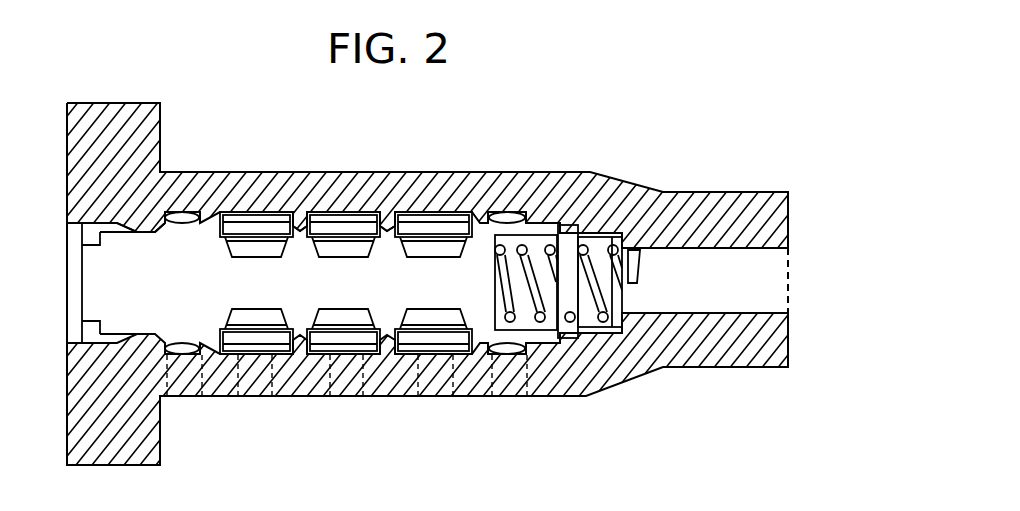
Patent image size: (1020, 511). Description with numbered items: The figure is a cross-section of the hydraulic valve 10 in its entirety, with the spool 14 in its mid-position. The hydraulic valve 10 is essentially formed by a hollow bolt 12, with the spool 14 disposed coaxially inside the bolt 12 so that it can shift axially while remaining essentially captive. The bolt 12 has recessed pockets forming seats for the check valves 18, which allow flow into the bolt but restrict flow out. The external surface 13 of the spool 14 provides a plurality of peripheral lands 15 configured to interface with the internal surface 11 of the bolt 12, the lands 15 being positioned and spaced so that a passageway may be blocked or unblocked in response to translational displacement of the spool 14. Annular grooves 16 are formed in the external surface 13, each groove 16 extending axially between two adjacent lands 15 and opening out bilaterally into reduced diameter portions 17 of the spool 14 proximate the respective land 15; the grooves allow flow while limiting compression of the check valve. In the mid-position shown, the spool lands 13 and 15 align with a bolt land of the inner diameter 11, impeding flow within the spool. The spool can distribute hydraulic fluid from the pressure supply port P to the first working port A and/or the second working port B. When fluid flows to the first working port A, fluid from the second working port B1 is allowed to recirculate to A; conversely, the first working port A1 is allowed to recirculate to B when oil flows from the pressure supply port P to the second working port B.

The hydraulic valve 10 is at (95, 66).
The internal surface of the bolt 11 is at (152, 240).
The hollow bolt 12 is at (67, 205).
The external surface of the spool 13 is at (145, 221).
The spool 14 is at (128, 348).
The peripheral lands 15 is at (300, 231).
The annular grooves 16 is at (442, 242).
The reduced diameter portions 17 is at (478, 343).
The check valve 18 is at (263, 210).
The second working port B is at (186, 398).
The second working port B1 is at (254, 397).
The pressure supply port P is at (340, 397).
The first working port A1 is at (433, 397).
The first working port A is at (510, 397).